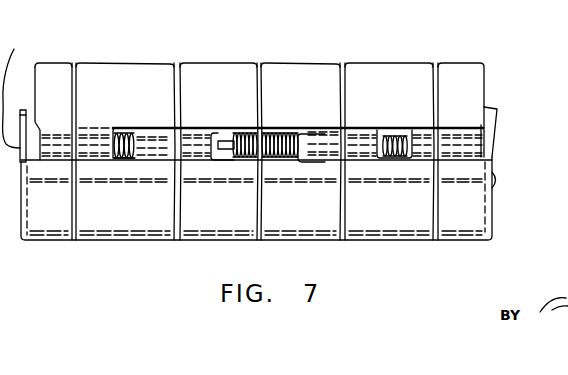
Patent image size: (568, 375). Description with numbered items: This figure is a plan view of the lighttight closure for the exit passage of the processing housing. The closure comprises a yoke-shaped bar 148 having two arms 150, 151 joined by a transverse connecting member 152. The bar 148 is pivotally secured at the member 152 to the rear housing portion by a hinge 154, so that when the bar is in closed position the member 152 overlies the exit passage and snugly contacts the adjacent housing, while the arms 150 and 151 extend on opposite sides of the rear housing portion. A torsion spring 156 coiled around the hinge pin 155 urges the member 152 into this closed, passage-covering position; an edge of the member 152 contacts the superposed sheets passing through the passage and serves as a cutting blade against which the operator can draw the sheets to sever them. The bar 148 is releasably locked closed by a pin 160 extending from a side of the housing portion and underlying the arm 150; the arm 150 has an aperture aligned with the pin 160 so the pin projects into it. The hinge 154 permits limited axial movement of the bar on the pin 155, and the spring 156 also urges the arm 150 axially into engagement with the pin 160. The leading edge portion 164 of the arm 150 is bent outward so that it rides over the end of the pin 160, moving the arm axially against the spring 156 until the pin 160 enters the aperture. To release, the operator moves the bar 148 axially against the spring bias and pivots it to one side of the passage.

The yoke-shaped bar 148 is at (220, 206).
The arm 150 is at (493, 202).
The arm 151 is at (25, 99).
The transverse connecting member 152 is at (366, 222).
The hinge 154 is at (186, 127).
The hinge pin 155 is at (224, 137).
The torsion spring 156 is at (277, 137).
The pin 160 is at (497, 178).
The leading edge portion 164 is at (498, 111).